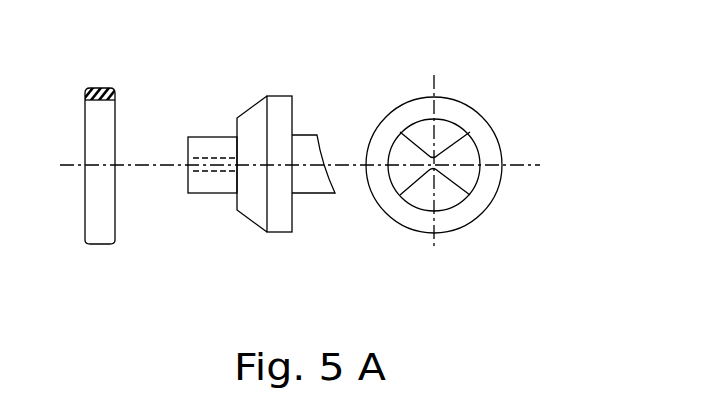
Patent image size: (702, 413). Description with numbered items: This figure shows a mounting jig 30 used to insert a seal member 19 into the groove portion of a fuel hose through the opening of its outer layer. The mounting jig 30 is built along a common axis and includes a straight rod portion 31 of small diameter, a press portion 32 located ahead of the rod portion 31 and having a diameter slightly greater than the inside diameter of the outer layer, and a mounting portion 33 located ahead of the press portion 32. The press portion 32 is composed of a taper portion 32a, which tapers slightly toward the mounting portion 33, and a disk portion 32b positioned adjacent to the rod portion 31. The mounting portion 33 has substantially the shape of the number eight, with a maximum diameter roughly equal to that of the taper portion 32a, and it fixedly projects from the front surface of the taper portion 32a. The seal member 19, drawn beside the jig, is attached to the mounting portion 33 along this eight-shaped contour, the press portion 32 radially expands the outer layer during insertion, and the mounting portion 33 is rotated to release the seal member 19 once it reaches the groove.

The seal member 19 is at (107, 86).
The mounting jig 30 is at (301, 74).
The rod portion 31 is at (317, 194).
The press portion 32 is at (385, 173).
The taper portion 32a is at (247, 219).
The disk portion 32b is at (278, 233).
The mounting portion 33 is at (205, 137).